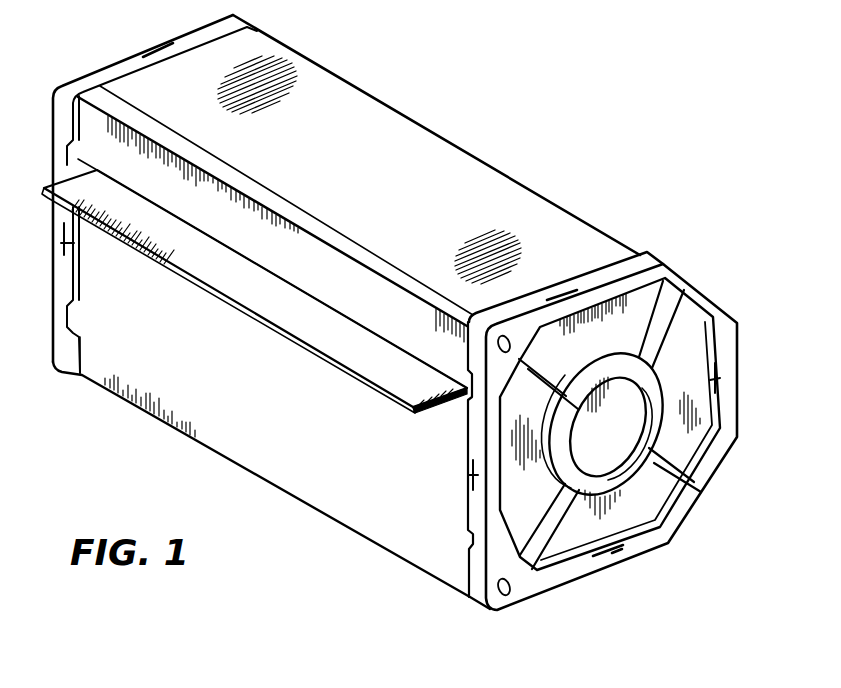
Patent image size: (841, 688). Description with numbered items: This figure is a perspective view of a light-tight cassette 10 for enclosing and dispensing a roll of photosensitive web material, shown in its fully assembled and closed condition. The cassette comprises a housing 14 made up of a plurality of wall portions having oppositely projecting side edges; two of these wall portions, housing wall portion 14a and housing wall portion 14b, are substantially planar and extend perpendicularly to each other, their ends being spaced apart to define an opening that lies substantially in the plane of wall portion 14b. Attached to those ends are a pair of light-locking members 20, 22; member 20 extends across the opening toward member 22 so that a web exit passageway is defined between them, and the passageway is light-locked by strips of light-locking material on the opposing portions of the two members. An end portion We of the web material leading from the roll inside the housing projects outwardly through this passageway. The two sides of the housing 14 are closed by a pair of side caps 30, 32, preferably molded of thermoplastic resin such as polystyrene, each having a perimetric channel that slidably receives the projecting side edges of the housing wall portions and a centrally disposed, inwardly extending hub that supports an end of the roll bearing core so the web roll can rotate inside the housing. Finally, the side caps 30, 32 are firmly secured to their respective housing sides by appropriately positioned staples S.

The light-tight cassette 10 is at (440, 101).
The housing 14 is at (512, 191).
The housing wall portion 14a is at (356, 175).
The housing wall portion 14b is at (234, 373).
The light-locking member 20 is at (381, 291).
The light-locking member 22 is at (457, 404).
The side cap 30 is at (100, 73).
The side cap 32 is at (707, 490).
The staples S is at (157, 50).
The end portion of the web material We is at (210, 255).